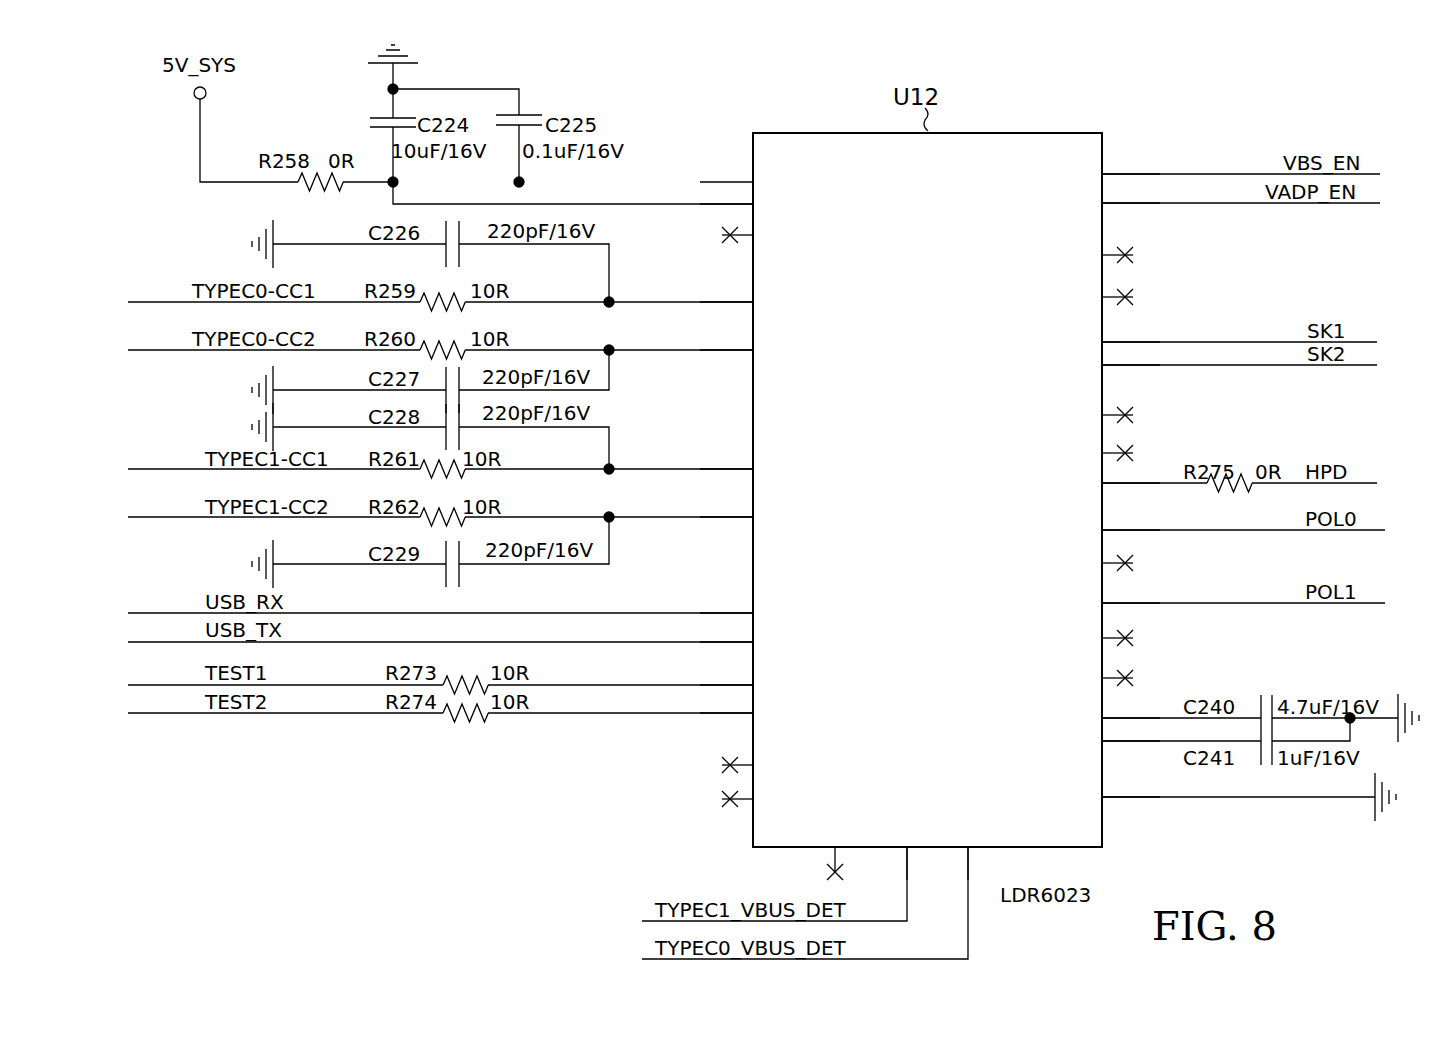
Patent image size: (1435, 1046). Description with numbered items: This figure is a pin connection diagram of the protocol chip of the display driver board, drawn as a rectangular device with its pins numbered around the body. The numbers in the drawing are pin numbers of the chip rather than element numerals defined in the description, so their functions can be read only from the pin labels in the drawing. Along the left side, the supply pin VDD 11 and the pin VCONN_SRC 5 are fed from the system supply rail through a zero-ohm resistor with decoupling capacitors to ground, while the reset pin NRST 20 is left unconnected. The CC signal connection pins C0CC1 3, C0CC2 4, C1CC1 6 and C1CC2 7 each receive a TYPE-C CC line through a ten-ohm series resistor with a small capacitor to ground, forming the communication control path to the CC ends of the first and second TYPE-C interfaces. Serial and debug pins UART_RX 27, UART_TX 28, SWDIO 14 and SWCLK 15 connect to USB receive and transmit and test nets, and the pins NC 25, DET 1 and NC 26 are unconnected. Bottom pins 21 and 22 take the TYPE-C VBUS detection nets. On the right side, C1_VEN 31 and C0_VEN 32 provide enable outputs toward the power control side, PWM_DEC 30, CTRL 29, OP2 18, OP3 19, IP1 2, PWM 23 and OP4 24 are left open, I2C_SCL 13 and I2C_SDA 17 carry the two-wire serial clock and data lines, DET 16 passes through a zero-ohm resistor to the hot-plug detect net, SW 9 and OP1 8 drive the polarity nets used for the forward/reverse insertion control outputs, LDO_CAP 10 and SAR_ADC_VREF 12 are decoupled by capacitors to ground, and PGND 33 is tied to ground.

The DET pin 1 is at (764, 792).
The IP1 pin 2 is at (1100, 556).
The C0CC1 pin 3 is at (766, 298).
The C0CC2 pin 4 is at (766, 346).
The VCONN_SRC pin 5 is at (794, 199).
The C1CC1 pin 6 is at (766, 465).
The C1CC2 pin 7 is at (766, 513).
The OP1 pin 8 is at (1108, 597).
The SW pin 9 is at (1113, 526).
The LDO_CAP pin 10 is at (1083, 712).
The VDD pin 11 is at (754, 177).
The SAR_ADC_VREF pin 12 is at (1051, 736).
The I2C_SCL pin 13 is at (1089, 337).
The SWDIO pin 14 is at (767, 679).
The SWCLK pin 15 is at (768, 706).
The DET pin 16 is at (1109, 479).
The I2C_SDA pin 17 is at (1087, 360).
The OP2 pin 18 is at (1098, 408).
The OP3 pin 19 is at (1098, 446).
The NRST pin 20 is at (767, 228).
The TYPEC1_VBUS_DET pin 21 is at (891, 863).
The TYPEC0_VBUS_DET pin 22 is at (986, 863).
The PWM pin 23 is at (1095, 632).
The OP4 pin 24 is at (1098, 668).
The NC pin 25 is at (754, 758).
The NC pin 26 is at (822, 853).
The UART_RX pin 27 is at (778, 609).
The UART_TX pin 28 is at (777, 637).
The CTRL pin 29 is at (1094, 290).
The PWM_DEC pin 30 is at (1069, 248).
The C1_VEN pin 31 is at (1090, 169).
The C0_VEN pin 32 is at (1090, 197).
The PGND pin 33 is at (1100, 792).